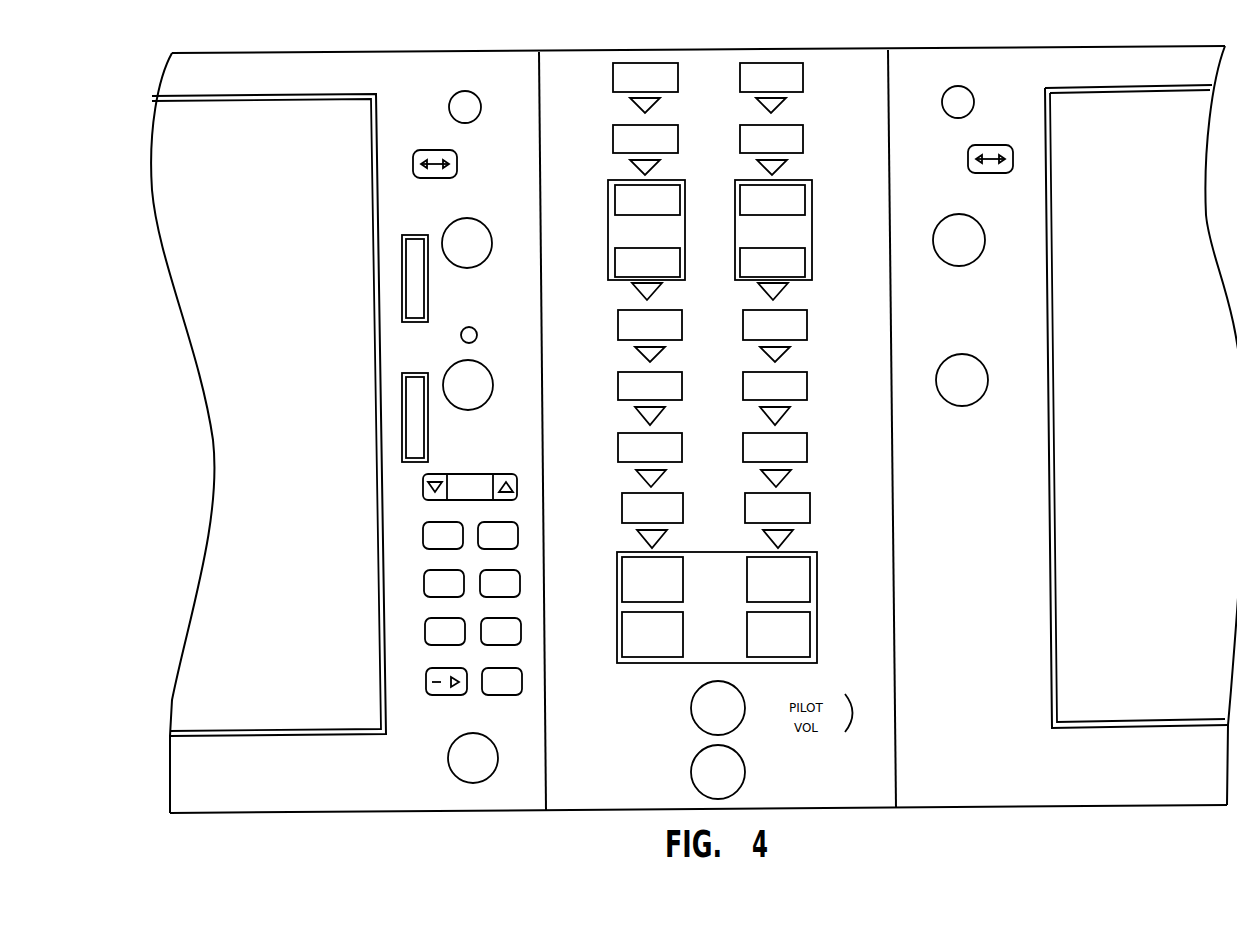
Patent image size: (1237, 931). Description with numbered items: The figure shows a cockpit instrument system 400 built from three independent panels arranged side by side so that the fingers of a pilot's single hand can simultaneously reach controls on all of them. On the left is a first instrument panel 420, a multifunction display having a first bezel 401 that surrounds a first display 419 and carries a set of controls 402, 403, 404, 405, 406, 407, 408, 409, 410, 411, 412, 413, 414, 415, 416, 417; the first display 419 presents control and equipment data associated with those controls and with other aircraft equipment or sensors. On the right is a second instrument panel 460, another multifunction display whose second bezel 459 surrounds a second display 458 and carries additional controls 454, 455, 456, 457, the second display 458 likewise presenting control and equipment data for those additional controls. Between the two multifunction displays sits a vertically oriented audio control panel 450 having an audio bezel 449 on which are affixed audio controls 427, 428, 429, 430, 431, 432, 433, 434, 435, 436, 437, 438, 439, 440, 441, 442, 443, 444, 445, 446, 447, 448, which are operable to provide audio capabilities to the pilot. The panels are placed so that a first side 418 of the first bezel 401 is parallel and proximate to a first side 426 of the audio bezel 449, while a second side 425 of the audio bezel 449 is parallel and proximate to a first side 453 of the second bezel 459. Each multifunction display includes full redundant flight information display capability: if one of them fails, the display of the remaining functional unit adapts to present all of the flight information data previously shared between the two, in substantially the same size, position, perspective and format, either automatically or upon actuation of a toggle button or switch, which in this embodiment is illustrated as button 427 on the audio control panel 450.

The cockpit instrument system 400 is at (975, 818).
The first bezel 401 is at (357, 58).
The control 402 is at (453, 96).
The control 403 is at (413, 164).
The control 404 is at (467, 268).
The control 405 is at (402, 278).
The control 406 is at (468, 410).
The control 407 is at (402, 420).
The control 408 is at (517, 489).
The control 409 is at (423, 536).
The control 410 is at (518, 536).
The control 411 is at (424, 584).
The control 412 is at (520, 584).
The control 413 is at (425, 632).
The control 414 is at (521, 632).
The control 415 is at (522, 681).
The control 416 is at (426, 681).
The control 417 is at (448, 758).
The first side of the first bezel 418 is at (532, 289).
The first display 419 is at (237, 153).
The first instrument panel 420 is at (425, 420).
The second side of the audio bezel 425 is at (895, 762).
The first side of the audio bezel 426 is at (545, 757).
The button 427 is at (691, 774).
The audio control 428 is at (691, 710).
The audio control 429 is at (810, 576).
The audio control 430 is at (810, 636).
The audio control 431 is at (683, 636).
The audio control 432 is at (683, 578).
The audio control 433 is at (810, 508).
The audio control 434 is at (683, 508).
The audio control 435 is at (807, 447).
The audio control 436 is at (682, 447).
The audio control 437 is at (807, 386).
The audio control 438 is at (682, 386).
The audio control 439 is at (807, 325).
The audio control 440 is at (682, 325).
The audio control 441 is at (680, 200).
The audio control 442 is at (805, 200).
The audio control 443 is at (680, 263).
The audio control 444 is at (805, 263).
The audio control 445 is at (803, 139).
The audio control 446 is at (678, 139).
The audio control 447 is at (803, 77).
The audio control 448 is at (678, 77).
The audio bezel 449 is at (818, 57).
The audio control panel 450 is at (712, 52).
The first side of the second bezel 453 is at (973, 726).
The additional control 454 is at (962, 406).
The additional control 455 is at (959, 266).
The additional control 456 is at (990, 145).
The additional control 457 is at (972, 91).
The second display 458 is at (1157, 145).
The second bezel 459 is at (1152, 56).
The second instrument panel 460 is at (1035, 50).